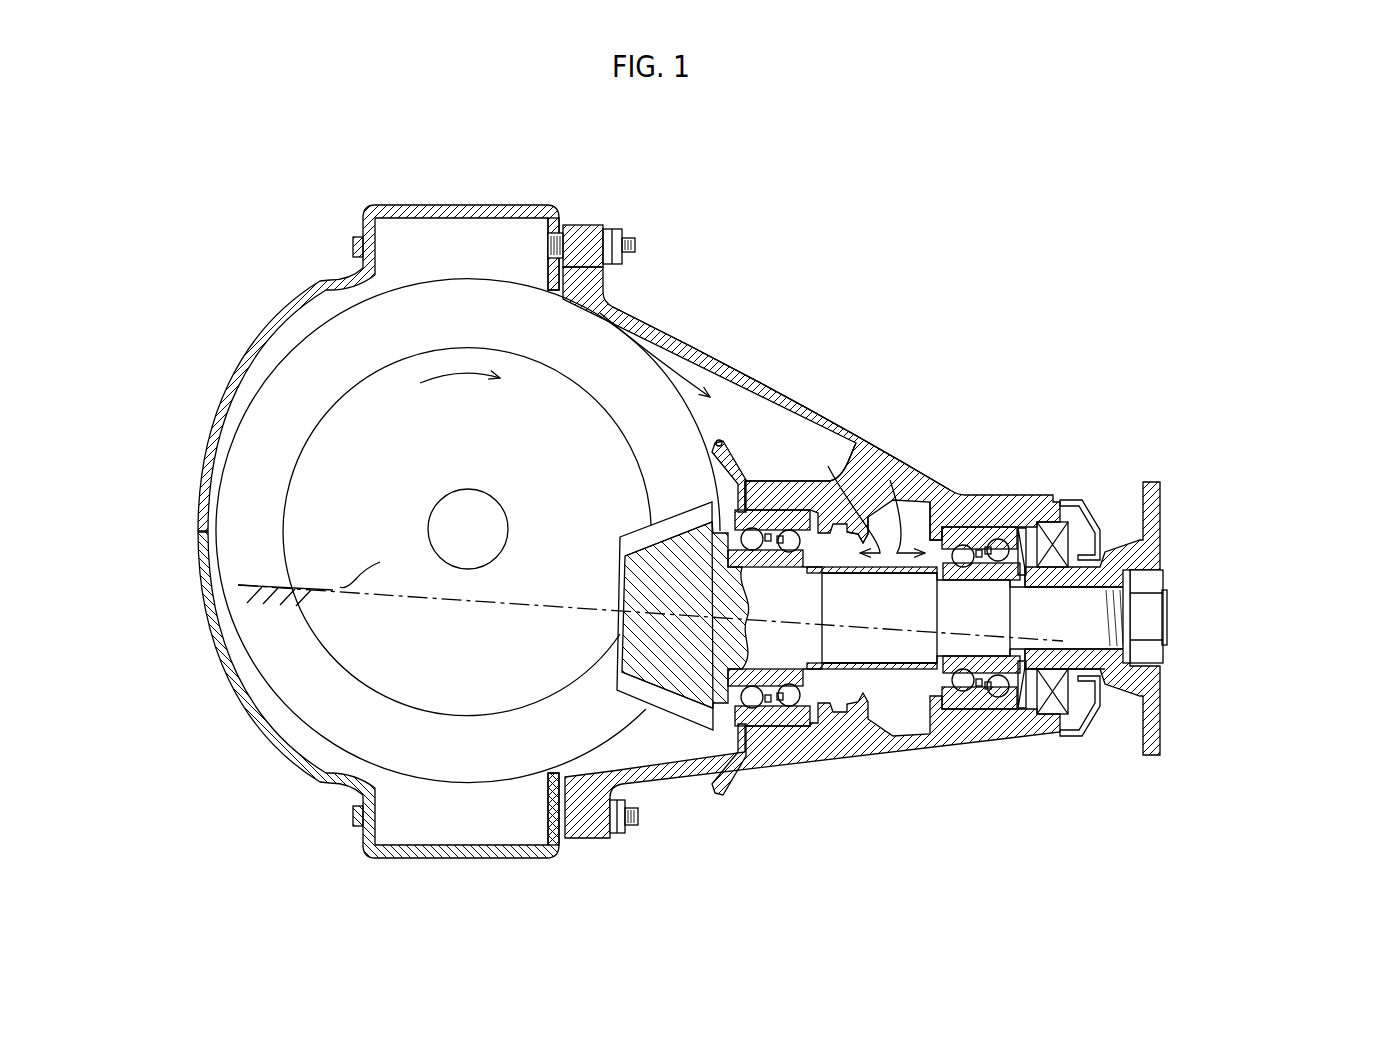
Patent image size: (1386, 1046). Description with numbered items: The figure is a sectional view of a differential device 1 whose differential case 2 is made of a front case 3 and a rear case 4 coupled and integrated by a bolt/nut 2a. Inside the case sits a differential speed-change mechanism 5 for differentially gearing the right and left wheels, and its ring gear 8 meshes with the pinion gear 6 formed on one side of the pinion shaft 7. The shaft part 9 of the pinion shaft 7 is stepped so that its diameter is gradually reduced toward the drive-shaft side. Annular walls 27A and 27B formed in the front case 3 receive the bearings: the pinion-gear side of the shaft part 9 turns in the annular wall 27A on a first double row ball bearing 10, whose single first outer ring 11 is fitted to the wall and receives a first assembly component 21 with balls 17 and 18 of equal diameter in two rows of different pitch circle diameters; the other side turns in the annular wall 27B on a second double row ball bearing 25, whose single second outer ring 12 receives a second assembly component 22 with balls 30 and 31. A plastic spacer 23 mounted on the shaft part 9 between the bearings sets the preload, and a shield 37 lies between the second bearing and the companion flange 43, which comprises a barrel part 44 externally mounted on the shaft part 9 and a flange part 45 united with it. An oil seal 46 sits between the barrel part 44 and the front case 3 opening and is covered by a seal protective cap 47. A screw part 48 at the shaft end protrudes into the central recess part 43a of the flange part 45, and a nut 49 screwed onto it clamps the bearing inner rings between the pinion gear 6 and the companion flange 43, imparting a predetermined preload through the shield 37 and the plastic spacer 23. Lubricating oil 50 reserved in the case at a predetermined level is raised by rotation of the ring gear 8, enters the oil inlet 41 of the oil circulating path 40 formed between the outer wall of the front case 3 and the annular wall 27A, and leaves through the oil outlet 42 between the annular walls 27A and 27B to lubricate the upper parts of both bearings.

The differential device 1 is at (717, 272).
The differential case 2 is at (659, 162).
The bolt/nut 2a is at (588, 247).
The front case 3 is at (633, 300).
The rear case 4 is at (557, 212).
The differential speed-change mechanism 5 is at (280, 362).
The pinion gear 6 is at (643, 527).
The pinion shaft 7 is at (847, 667).
The ring gear 8 is at (260, 411).
The shaft part 9 is at (873, 643).
The first double row ball bearing 10 is at (935, 584).
The first outer ring 11 is at (717, 500).
The second outer ring 12 is at (978, 705).
The ball 17 is at (747, 515).
The ball 18 is at (788, 547).
The first assembly component 21 is at (728, 693).
The second assembly component 22 is at (945, 707).
The plastic spacer 23 is at (885, 670).
The second double row ball bearing 25 is at (1138, 601).
The annular wall 27A is at (797, 505).
The annular wall 27B is at (933, 525).
The ball 30 is at (963, 560).
The ball 31 is at (993, 530).
The shield 37 is at (1021, 527).
The oil circulating path 40 is at (752, 408).
The oil inlet 41 is at (697, 402).
The oil outlet 42 is at (897, 505).
The companion flange 43 is at (1167, 520).
The central recess part 43a is at (1145, 567).
The barrel part 44 is at (1063, 665).
The flange part 45 is at (1157, 727).
The oil seal 46 is at (1063, 547).
The seal protective cap 47 is at (1080, 727).
The screw part 48 is at (1167, 627).
The nut 49 is at (1147, 610).
The lubricating oil 50 is at (262, 587).